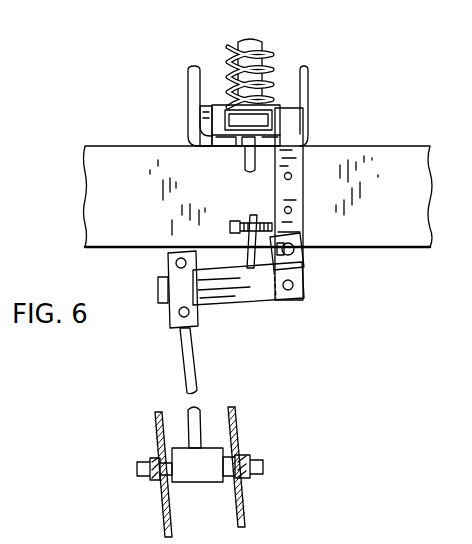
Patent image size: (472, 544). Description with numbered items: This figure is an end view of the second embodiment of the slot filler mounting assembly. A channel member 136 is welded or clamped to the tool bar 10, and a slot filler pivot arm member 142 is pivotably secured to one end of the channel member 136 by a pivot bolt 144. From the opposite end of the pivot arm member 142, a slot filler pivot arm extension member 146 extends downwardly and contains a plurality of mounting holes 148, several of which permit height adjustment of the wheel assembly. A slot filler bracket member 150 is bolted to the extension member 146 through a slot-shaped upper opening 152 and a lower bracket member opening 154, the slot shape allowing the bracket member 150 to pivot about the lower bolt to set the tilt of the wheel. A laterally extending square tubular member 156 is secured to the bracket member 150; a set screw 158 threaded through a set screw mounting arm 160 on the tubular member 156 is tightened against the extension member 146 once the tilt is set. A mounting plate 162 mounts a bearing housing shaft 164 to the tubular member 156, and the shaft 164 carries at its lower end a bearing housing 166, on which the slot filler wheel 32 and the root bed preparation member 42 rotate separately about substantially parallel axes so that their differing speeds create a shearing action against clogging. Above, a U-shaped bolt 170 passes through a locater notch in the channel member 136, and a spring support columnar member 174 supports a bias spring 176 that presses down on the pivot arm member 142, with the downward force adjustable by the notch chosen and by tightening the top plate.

The tool bar 10 is at (90, 166).
The slot filler wheel 32 is at (245, 426).
The root bed preparation member 42 is at (155, 420).
The channel member 136 is at (216, 148).
The slot filler pivot arm member 142 is at (276, 118).
The pivot bolt 144 is at (205, 108).
The slot filler pivot arm extension member 146 is at (303, 160).
The mounting holes 148 is at (290, 207).
The slot filler bracket member 150 is at (303, 236).
The upper opening 152 is at (304, 255).
The lower bracket member opening 154 is at (296, 300).
The square tubular member 156 is at (249, 290).
The set screw 158 is at (262, 219).
The set screw mounting arm 160 is at (247, 255).
The mounting plate 162 is at (177, 302).
The bearing housing shaft 164 is at (202, 410).
The bearing housing 166 is at (206, 473).
The U-shaped bolt 170 is at (308, 72).
The spring support columnar member 174 is at (254, 46).
The bias spring 176 is at (233, 62).